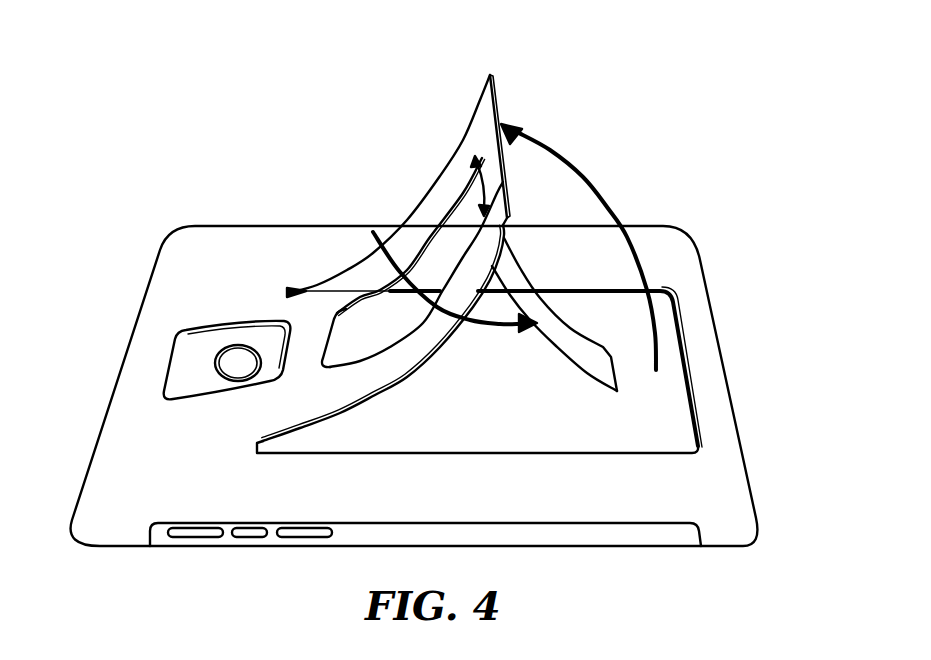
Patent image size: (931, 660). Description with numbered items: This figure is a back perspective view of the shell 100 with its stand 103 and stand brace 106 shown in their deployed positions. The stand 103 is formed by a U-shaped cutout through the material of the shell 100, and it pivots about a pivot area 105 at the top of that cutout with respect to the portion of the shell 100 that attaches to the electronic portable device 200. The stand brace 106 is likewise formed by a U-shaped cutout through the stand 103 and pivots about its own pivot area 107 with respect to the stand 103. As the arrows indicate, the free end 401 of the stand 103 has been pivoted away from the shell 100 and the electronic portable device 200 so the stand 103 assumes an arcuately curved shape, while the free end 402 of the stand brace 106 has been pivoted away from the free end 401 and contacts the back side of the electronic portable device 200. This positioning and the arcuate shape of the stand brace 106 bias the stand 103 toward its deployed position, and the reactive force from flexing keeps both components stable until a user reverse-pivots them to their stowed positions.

The shell 100 is at (128, 477).
The stand 103 is at (437, 207).
The pivot area 105 is at (290, 310).
The stand brace 106 is at (562, 327).
The pivot area 107 is at (480, 183).
The electronic portable device 200 is at (618, 430).
The free end 401 is at (497, 91).
The free end 402 is at (600, 364).